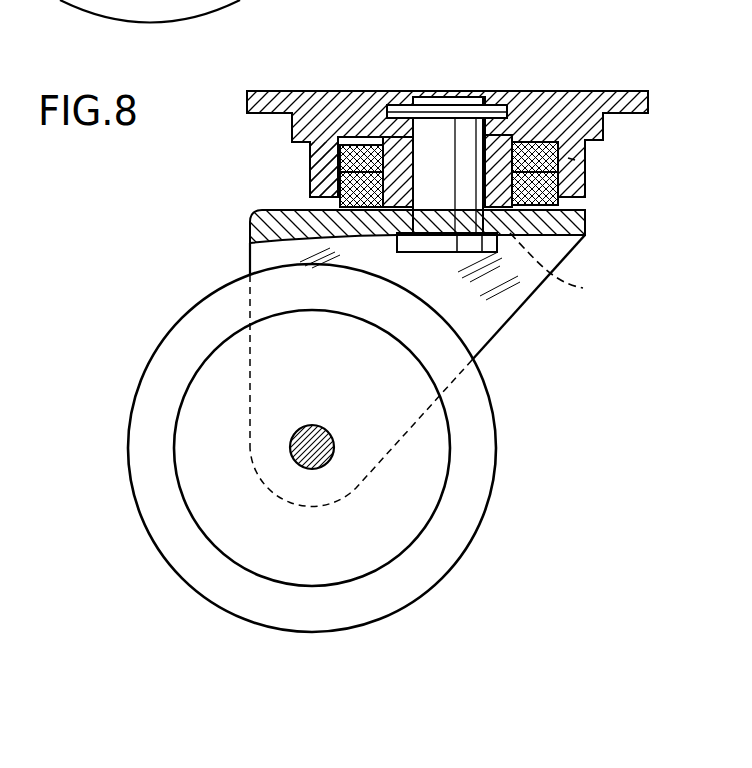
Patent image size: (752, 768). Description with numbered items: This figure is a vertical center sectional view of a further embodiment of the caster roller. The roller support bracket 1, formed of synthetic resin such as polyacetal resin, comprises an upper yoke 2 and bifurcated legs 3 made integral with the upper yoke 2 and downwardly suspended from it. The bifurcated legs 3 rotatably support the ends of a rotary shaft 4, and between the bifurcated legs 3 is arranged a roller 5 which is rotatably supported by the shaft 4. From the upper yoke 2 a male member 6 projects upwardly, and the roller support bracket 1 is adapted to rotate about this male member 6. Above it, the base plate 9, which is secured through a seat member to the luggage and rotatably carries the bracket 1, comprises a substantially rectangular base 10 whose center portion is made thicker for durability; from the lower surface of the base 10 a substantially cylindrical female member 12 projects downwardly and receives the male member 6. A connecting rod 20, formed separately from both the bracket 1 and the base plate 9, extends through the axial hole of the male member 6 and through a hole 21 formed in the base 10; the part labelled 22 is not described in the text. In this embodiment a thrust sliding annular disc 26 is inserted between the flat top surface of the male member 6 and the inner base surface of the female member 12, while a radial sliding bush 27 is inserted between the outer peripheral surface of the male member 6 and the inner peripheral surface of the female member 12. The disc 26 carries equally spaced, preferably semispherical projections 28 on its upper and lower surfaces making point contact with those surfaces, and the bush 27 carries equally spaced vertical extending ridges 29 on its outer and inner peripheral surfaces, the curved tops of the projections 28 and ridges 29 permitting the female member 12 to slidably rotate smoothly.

The roller support bracket 1 is at (240, 228).
The upper yoke 2 is at (293, 211).
The bifurcated legs 3 is at (257, 255).
The rotary shaft 4 is at (320, 447).
The roller 5 is at (183, 555).
The male member 6 is at (357, 147).
The base plate 9 is at (248, 80).
The base 10 is at (586, 95).
The female member 12 is at (318, 166).
The connecting rod 20 is at (446, 132).
The hole 21 is at (410, 138).
The washer plate 22 is at (415, 110).
The thrust sliding annular disc 26 is at (537, 112).
The radial sliding bush 27 is at (533, 172).
The projections 28 is at (502, 105).
The vertical extending ridges 29 is at (562, 157).